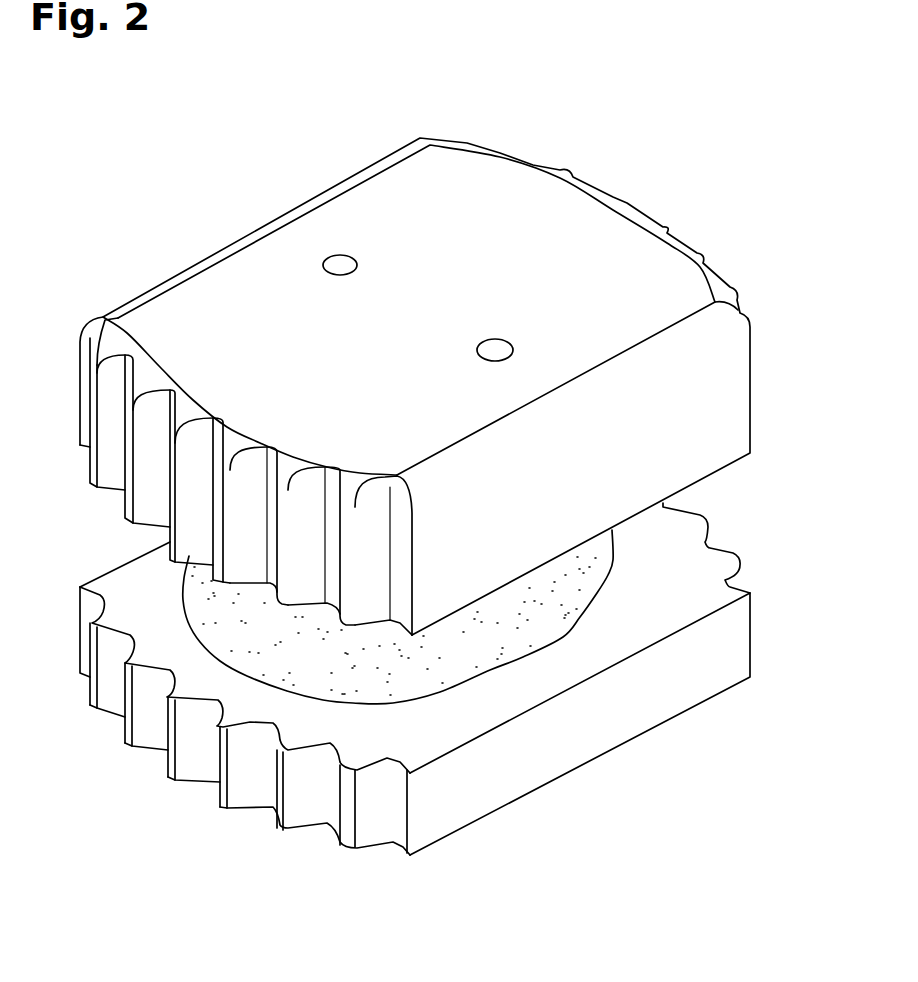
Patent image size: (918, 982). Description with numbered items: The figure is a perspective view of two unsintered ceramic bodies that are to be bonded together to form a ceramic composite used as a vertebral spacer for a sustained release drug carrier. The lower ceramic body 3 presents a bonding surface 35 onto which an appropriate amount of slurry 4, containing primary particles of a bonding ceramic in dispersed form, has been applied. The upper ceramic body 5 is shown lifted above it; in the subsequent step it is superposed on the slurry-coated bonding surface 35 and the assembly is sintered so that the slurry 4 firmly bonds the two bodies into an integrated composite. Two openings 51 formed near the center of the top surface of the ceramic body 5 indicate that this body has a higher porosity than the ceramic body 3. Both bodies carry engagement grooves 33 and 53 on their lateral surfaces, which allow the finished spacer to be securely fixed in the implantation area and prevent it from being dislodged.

The ceramic body 5 is at (192, 293).
The openings 51 is at (357, 258).
The engagement grooves 53 is at (130, 363).
The ceramic body 3 is at (677, 697).
The engagement grooves 33 is at (217, 748).
The bonding surface 35 is at (650, 603).
The slurry 4 is at (200, 594).